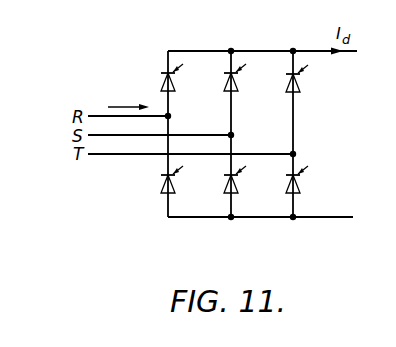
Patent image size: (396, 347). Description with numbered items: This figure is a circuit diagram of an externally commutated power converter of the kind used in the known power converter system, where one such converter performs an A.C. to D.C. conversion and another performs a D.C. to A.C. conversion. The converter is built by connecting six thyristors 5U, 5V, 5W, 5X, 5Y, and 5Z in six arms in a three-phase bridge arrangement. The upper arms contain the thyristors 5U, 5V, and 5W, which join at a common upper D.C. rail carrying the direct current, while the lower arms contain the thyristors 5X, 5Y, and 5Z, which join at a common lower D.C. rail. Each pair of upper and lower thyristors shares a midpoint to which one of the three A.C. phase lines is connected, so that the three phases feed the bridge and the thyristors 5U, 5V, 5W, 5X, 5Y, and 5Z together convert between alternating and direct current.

The thyristor 5U is at (173, 92).
The thyristor 5V is at (236, 92).
The thyristor 5W is at (298, 93).
The thyristor 5X is at (175, 194).
The thyristor 5Y is at (237, 194).
The thyristor 5Z is at (298, 194).